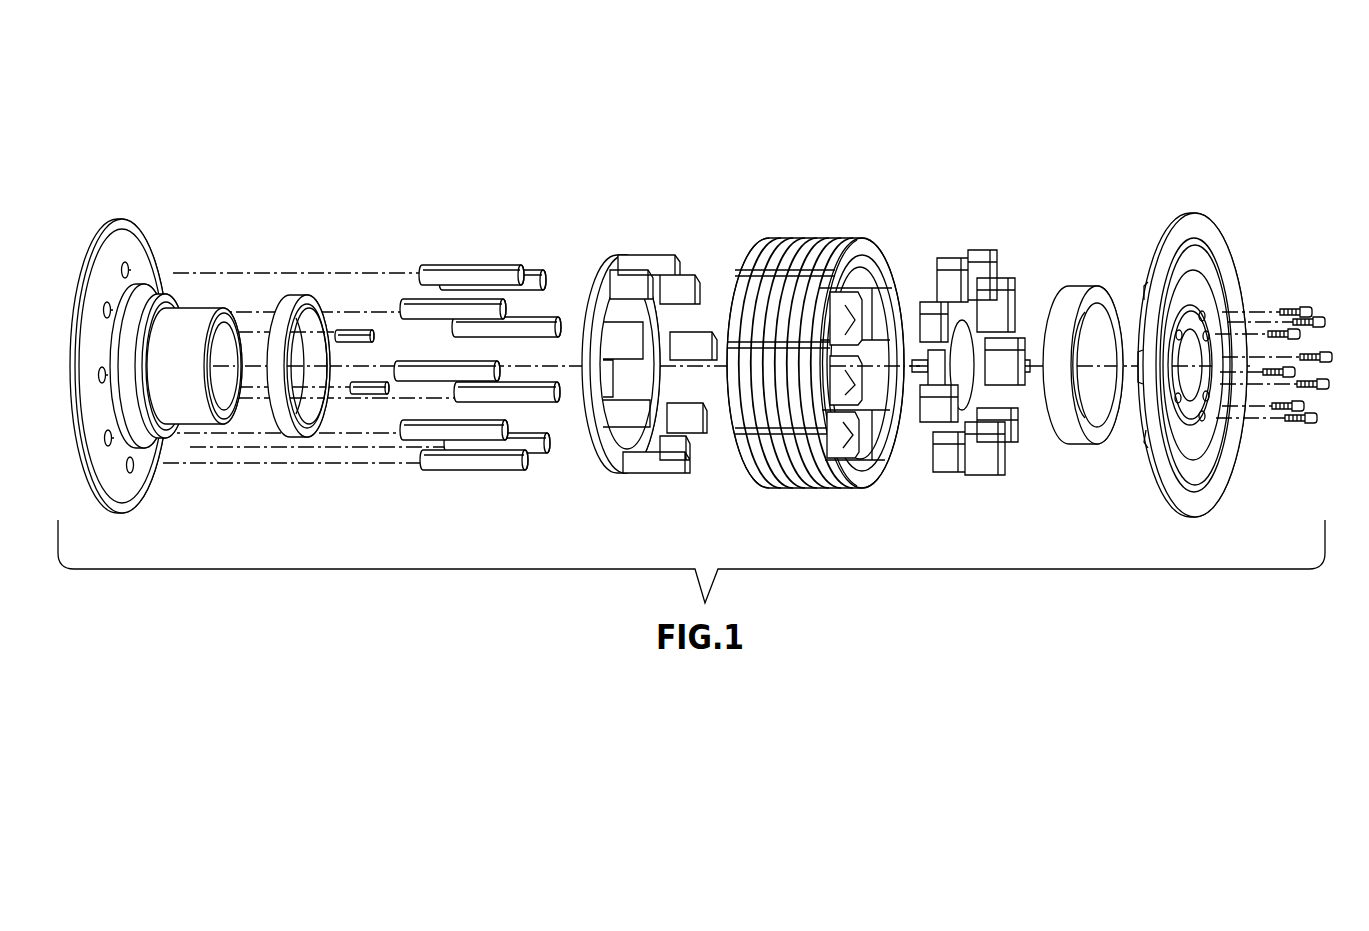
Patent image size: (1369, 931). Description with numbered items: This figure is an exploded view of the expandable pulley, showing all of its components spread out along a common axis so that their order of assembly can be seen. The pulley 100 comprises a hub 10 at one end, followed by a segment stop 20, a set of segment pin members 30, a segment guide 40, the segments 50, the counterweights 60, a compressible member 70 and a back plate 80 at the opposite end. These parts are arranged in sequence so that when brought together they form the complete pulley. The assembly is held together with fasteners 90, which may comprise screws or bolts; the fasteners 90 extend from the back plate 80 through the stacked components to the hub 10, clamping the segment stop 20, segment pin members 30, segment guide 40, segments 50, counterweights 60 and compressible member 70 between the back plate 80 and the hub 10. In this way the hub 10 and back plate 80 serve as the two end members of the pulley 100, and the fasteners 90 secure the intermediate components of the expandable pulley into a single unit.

The hub 10 is at (150, 240).
The segment stop 20 is at (303, 297).
The segment pin members 30 is at (470, 263).
The segment guide 40 is at (620, 258).
The segments 50 is at (793, 238).
The counterweights 60 is at (962, 252).
The compressible member 70 is at (1068, 290).
The back plate 80 is at (1202, 213).
The fasteners 90 is at (1284, 310).
The pulley 100 is at (884, 112).